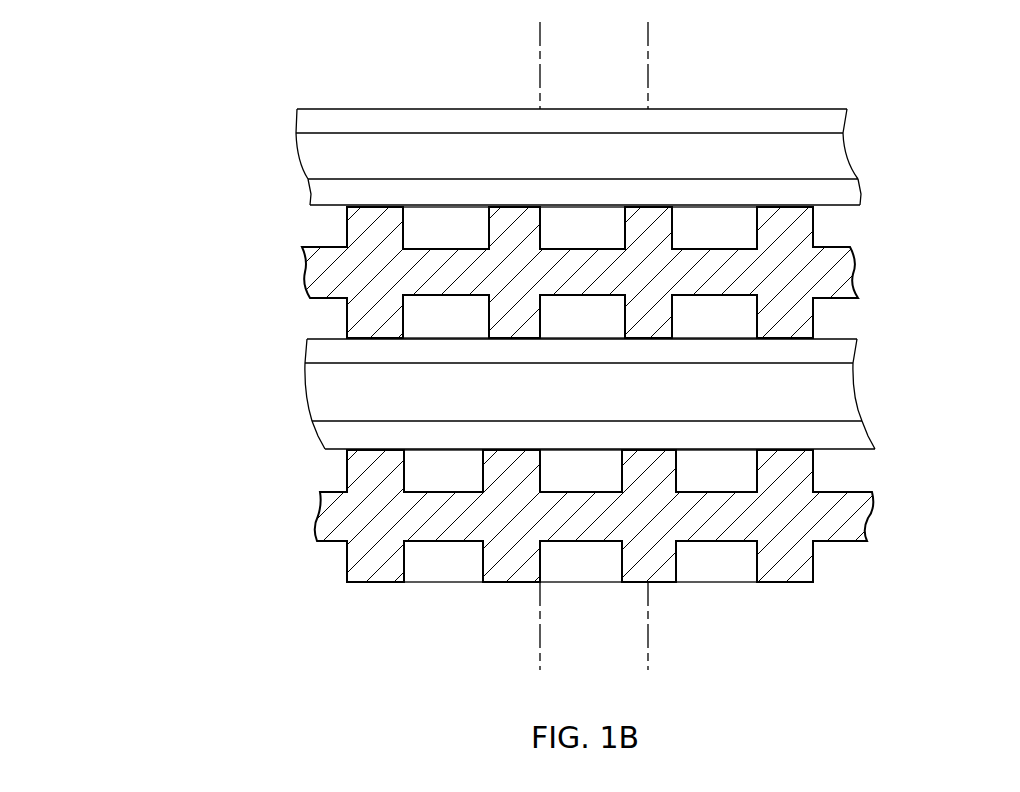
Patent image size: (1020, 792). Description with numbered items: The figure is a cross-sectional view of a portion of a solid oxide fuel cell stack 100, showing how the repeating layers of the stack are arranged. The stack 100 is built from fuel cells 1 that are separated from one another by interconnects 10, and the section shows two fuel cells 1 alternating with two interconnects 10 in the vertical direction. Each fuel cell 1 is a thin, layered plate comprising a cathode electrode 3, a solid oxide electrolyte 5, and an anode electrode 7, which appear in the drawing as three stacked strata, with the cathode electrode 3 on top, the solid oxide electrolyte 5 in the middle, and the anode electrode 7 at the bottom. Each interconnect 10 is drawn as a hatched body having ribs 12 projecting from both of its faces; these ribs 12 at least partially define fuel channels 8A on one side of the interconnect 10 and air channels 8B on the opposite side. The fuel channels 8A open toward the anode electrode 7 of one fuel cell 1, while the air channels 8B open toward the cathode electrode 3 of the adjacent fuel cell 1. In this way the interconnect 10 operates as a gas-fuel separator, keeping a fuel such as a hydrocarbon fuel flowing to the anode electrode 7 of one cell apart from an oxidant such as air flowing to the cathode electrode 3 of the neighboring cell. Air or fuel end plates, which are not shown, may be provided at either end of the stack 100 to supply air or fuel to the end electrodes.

The solid oxide fuel cell stack 100 is at (172, 219).
The fuel cell 1 is at (581, 278).
The cathode electrode 3 is at (296, 122).
The solid oxide electrolyte 5 is at (297, 160).
The anode electrode 7 is at (310, 200).
The interconnect 10 is at (578, 390).
The rib 12 is at (347, 231).
The fuel channel 8A is at (732, 488).
The air channel 8B is at (580, 438).